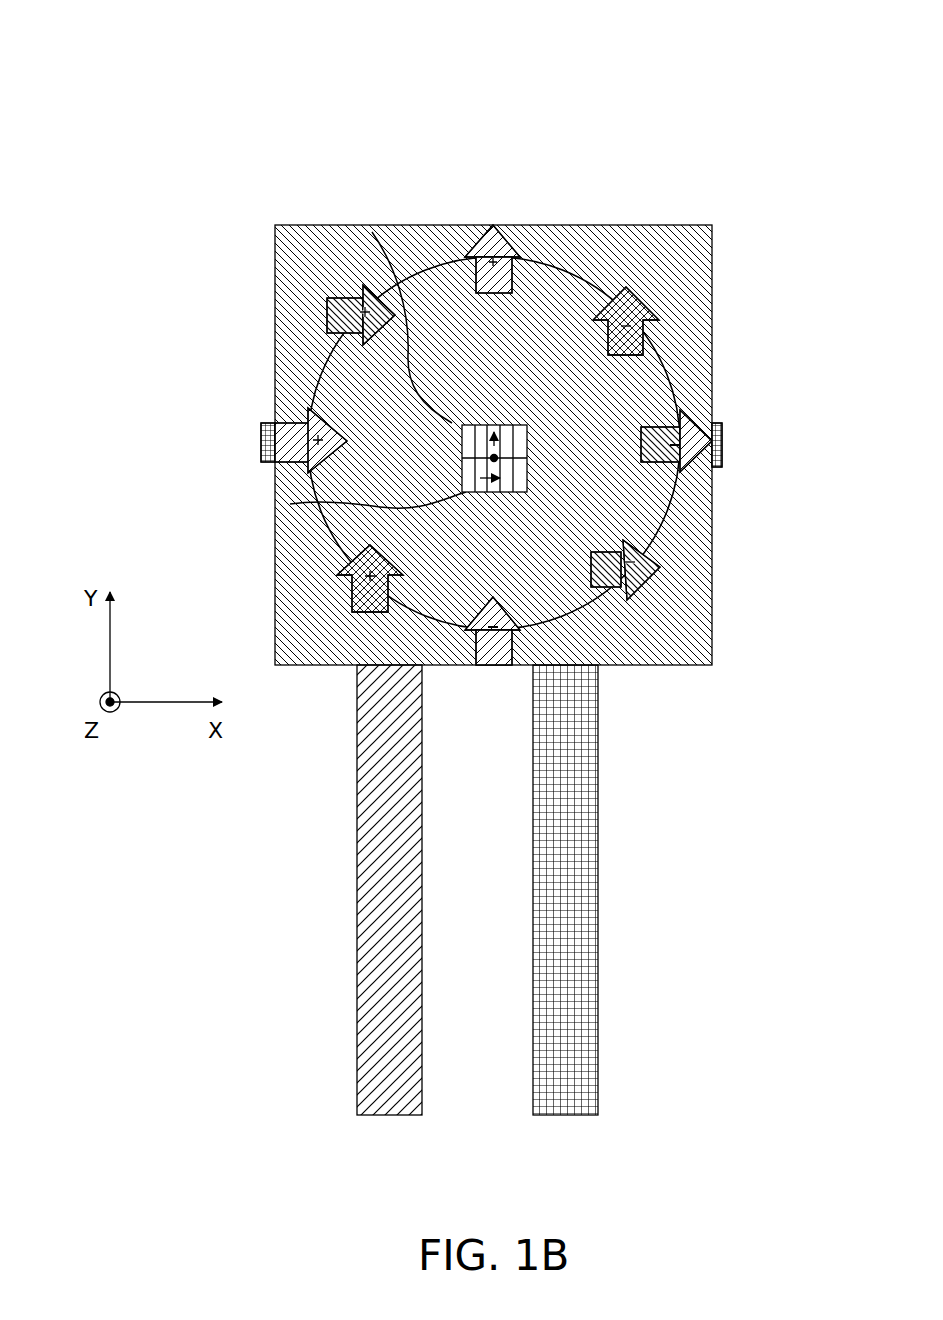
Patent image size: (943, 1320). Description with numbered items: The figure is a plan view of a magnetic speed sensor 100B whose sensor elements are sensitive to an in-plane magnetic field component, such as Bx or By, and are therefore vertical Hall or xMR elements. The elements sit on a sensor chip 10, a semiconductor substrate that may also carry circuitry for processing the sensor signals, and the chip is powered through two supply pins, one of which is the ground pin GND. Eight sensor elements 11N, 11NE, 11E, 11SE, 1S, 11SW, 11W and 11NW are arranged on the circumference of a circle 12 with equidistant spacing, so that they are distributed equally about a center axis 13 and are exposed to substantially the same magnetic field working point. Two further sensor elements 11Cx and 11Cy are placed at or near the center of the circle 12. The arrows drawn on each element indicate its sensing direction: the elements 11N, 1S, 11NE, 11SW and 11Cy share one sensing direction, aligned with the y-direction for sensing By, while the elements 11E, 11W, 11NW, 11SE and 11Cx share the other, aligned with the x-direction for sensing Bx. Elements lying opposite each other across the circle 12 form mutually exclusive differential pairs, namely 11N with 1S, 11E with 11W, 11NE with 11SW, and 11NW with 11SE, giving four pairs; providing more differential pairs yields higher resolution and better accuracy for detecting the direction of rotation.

The magnetic speed sensor 100B is at (163, 74).
The sensor chip 10 is at (657, 226).
The circle 12 is at (430, 258).
The sensor element 11Cy is at (372, 232).
The sensor element 11Cx is at (290, 504).
The sensor element 11N is at (493, 226).
The sensor element 11NE is at (640, 300).
The sensor element 11NW is at (327, 315).
The sensor element 11W is at (262, 450).
The sensor element 11E is at (712, 446).
The center axis 13 is at (500, 456).
The sensor element 11SW is at (362, 590).
The south sensor element 1S is at (497, 662).
The sensor element 11SE is at (630, 588).
The power supply pin GND is at (598, 832).